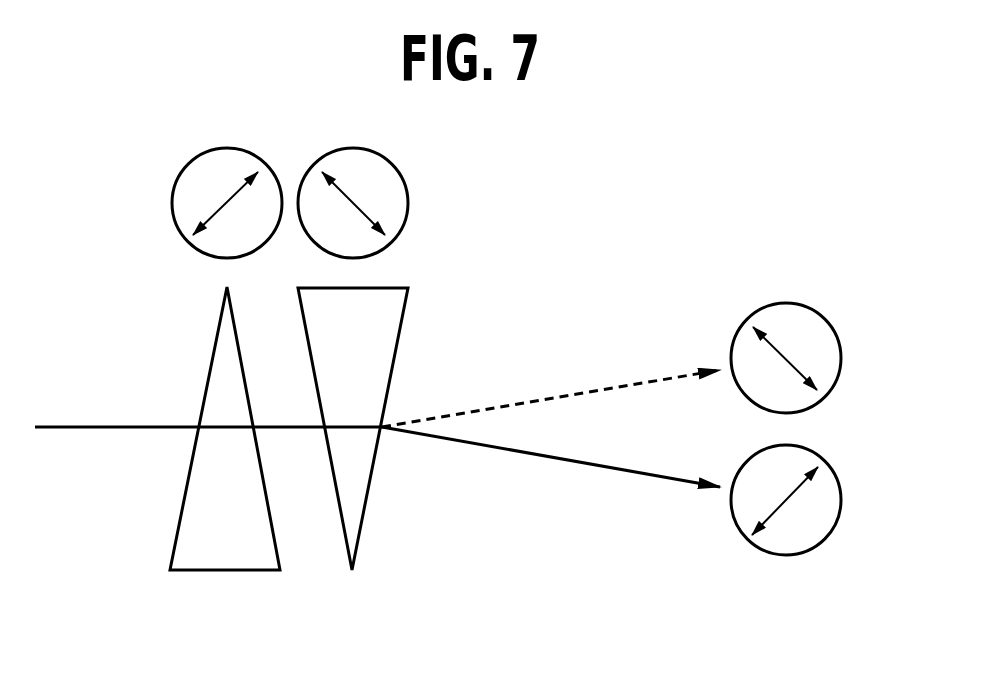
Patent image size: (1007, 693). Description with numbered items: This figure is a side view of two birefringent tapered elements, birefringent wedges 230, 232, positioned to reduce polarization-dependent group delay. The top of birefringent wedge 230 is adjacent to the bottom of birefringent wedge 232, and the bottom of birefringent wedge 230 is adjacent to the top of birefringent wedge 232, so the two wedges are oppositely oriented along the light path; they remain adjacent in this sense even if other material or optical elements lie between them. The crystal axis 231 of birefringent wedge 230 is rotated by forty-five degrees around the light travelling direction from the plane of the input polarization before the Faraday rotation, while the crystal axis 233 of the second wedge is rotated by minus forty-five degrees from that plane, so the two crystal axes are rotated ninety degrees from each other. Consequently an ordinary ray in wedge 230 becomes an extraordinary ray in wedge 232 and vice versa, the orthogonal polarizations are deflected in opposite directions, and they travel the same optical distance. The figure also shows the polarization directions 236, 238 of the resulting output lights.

The birefringent wedge 230 is at (200, 571).
The crystal axis 231 is at (204, 153).
The birefringent wedge 232 is at (364, 512).
The crystal axis 233 is at (363, 150).
The polarization direction 236 is at (815, 311).
The polarization direction 238 is at (818, 455).